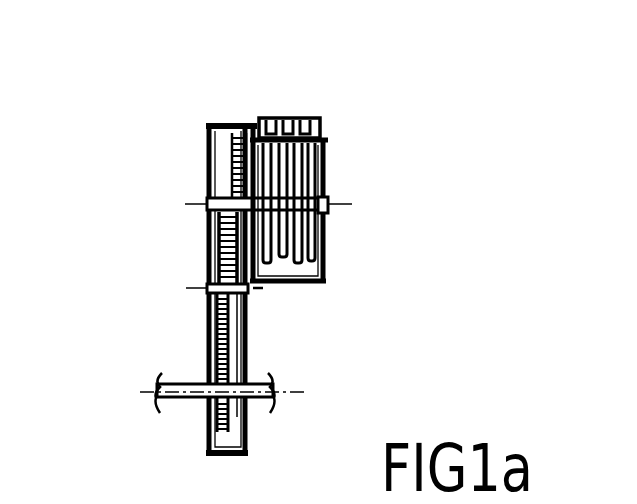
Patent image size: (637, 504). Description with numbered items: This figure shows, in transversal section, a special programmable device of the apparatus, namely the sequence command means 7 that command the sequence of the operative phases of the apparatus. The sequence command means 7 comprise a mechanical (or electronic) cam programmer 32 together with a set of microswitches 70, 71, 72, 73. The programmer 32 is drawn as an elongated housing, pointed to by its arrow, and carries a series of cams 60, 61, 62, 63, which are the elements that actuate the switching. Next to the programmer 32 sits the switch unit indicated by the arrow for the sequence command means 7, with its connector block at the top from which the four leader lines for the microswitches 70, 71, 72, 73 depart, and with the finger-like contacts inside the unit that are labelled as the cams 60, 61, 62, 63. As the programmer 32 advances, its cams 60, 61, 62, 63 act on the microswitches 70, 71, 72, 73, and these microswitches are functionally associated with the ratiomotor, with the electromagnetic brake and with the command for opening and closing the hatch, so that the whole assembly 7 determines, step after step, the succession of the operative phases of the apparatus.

The sequence command means 7 is at (360, 176).
The programmer 32 is at (203, 248).
The cam 60 is at (267, 266).
The cam 61 is at (283, 283).
The cam 62 is at (301, 256).
The cam 63 is at (320, 228).
The microswitch 70 is at (258, 121).
The microswitch 71 is at (277, 119).
The microswitch 72 is at (304, 120).
The microswitch 73 is at (320, 126).